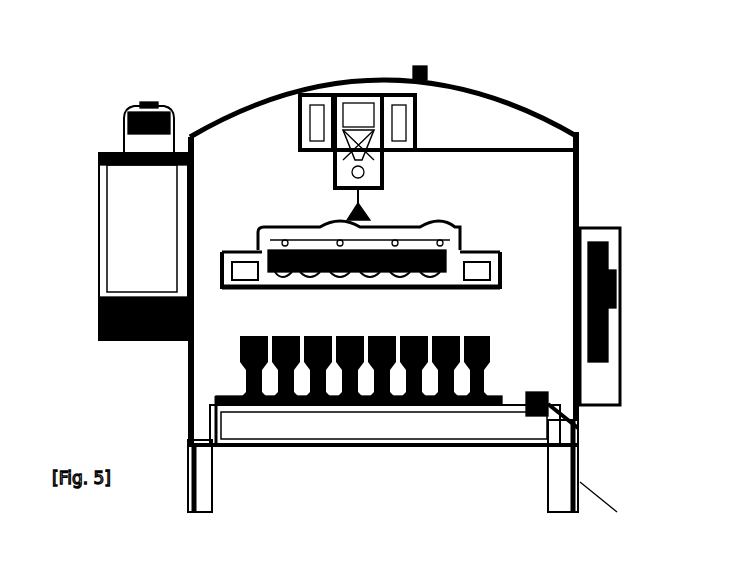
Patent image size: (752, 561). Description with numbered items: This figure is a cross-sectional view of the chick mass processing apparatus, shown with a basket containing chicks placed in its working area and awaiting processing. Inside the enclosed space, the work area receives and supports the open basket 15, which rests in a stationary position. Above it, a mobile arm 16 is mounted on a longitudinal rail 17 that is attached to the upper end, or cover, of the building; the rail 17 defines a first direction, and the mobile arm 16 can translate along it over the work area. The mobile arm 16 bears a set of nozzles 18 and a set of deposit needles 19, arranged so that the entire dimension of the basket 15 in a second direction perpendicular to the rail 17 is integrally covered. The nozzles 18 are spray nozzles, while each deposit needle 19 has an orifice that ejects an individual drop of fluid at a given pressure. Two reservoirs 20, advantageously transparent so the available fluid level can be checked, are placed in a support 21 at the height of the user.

The basket 15 is at (237, 362).
The mobile arm 16 is at (470, 255).
The longitudinal rail 17 is at (383, 125).
The set of nozzles 18 is at (350, 275).
The set of deposit needles 19 is at (445, 235).
The reservoirs 20 is at (123, 140).
The support 21 is at (99, 235).